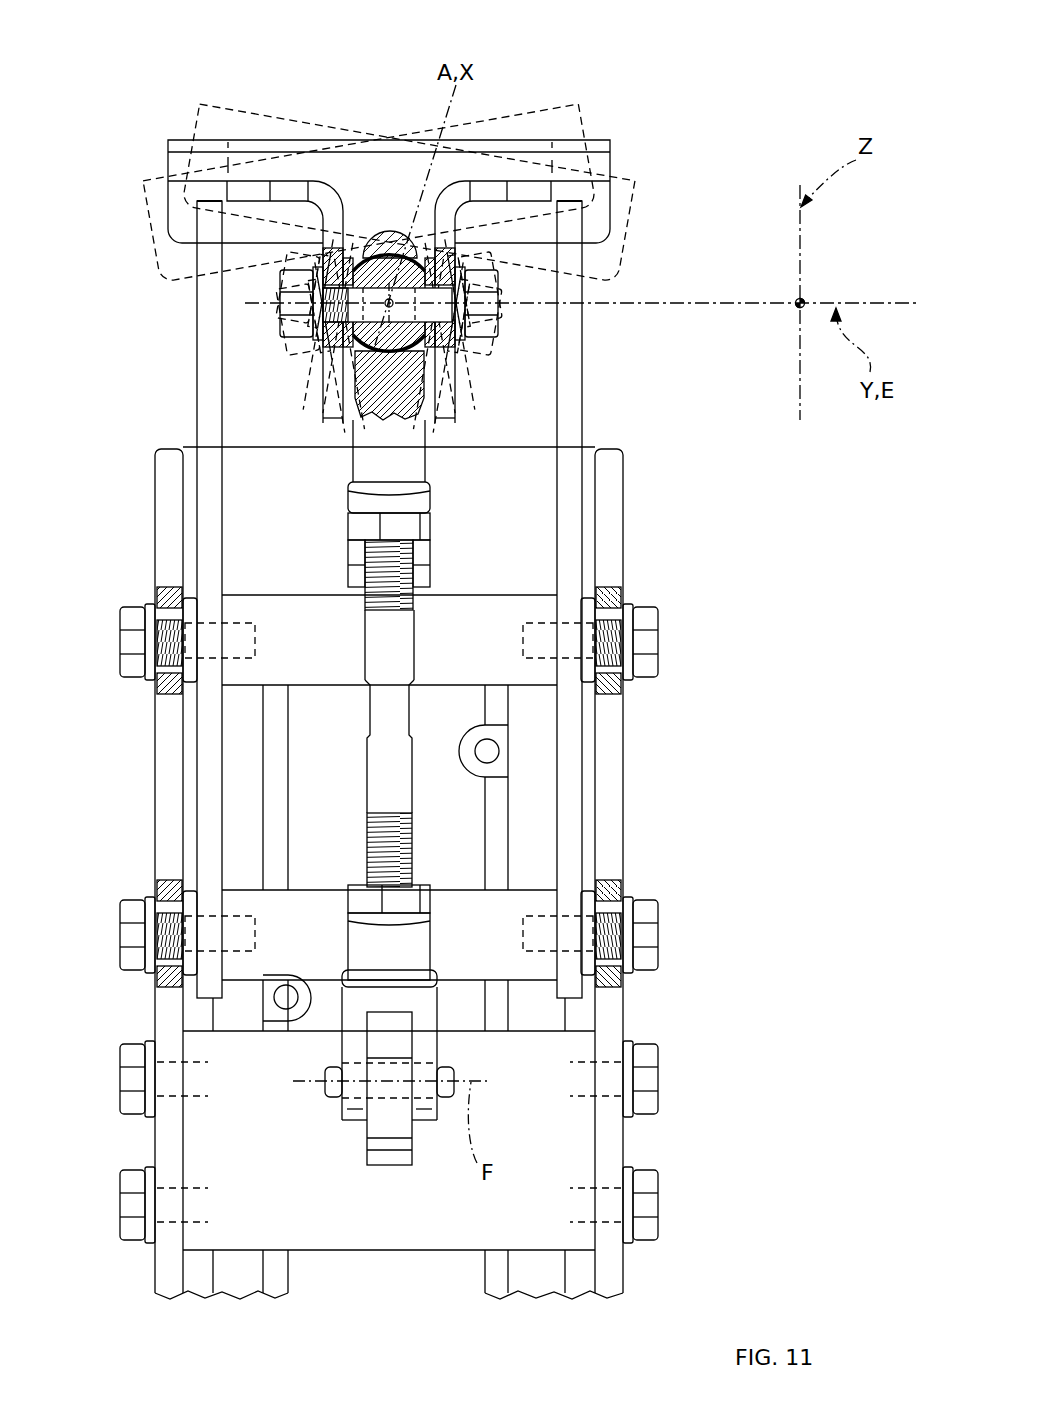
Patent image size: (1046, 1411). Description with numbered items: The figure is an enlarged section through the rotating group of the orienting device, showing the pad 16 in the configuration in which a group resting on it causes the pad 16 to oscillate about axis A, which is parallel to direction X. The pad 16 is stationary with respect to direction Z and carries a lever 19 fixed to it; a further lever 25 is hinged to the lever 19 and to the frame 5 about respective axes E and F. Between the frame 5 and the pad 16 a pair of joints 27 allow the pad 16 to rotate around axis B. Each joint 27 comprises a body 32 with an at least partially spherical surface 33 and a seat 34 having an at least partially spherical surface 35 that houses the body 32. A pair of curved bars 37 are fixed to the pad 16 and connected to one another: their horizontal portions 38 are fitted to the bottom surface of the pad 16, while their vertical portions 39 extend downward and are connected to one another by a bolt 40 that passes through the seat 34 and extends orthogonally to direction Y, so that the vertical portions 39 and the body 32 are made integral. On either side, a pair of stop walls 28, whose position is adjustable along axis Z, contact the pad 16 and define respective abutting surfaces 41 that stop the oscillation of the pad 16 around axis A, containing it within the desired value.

The frame 5 is at (642, 853).
The pad 16 is at (178, 137).
The lever 19 is at (172, 163).
The lever 25 is at (373, 657).
The joint 27 is at (378, 212).
The stop wall 28 is at (587, 293).
The body 32 is at (389, 412).
The spherical surface 33 is at (381, 357).
The seat 34 is at (365, 233).
The spherical surface 35 is at (380, 260).
The curved bar 37 is at (279, 160).
The horizontal portion 38 is at (280, 190).
The vertical portion 39 is at (322, 422).
The bolt 40 is at (442, 310).
The abutting surface 41 is at (203, 197).